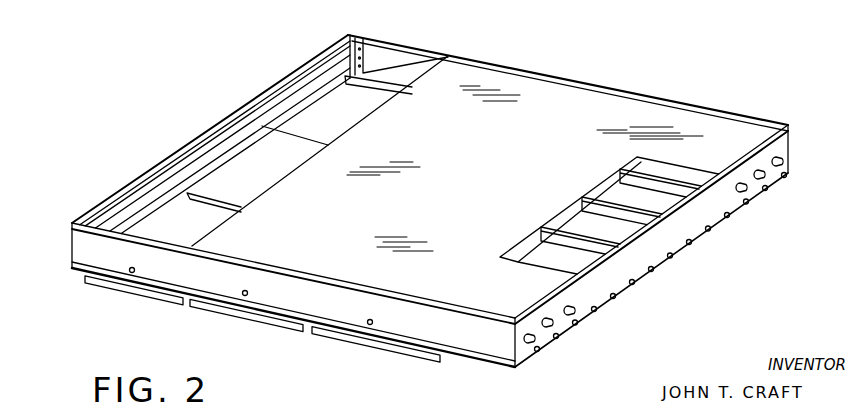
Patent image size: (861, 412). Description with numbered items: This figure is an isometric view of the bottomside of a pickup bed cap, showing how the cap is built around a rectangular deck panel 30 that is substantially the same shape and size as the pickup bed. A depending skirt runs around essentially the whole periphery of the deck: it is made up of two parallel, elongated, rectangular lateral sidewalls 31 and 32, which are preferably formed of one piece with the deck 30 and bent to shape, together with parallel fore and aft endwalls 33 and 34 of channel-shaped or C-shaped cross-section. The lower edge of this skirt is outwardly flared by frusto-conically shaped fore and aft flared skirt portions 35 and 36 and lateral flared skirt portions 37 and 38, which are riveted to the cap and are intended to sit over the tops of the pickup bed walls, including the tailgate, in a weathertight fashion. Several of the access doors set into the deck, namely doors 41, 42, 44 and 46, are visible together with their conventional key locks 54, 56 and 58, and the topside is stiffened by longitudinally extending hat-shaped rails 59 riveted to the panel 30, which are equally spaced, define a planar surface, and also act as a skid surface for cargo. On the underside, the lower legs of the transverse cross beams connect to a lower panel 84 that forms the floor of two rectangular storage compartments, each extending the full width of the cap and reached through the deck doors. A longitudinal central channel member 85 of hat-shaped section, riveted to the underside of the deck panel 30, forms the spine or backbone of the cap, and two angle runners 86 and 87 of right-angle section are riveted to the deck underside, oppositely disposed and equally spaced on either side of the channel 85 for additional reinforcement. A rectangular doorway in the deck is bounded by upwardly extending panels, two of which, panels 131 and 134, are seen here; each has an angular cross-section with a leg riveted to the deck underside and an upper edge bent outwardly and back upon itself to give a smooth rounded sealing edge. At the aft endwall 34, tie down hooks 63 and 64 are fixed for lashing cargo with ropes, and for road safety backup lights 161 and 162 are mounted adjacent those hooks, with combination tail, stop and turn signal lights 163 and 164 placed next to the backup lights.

The deck panel 30 is at (268, 176).
The lateral sidewall 31 is at (393, 71).
The lateral sidewall 32 is at (192, 281).
The fore endwall 33 is at (73, 243).
The aft endwall 34 is at (660, 263).
The fore flared skirt portion 35 is at (220, 118).
The aft flared skirt portion 36 is at (790, 126).
The lateral flared skirt portion 37 is at (430, 50).
The lateral flared skirt portion 38 is at (271, 262).
The access door 41 is at (347, 128).
The access door 42 is at (197, 235).
The access door 44 is at (229, 312).
The access door 46 is at (345, 339).
The key lock 54 is at (133, 271).
The key lock 56 is at (247, 297).
The key lock 58 is at (371, 324).
The rails 59 is at (468, 357).
The tie down hook 63 is at (755, 193).
The tie down hook 64 is at (597, 308).
The lower panel 84 is at (503, 178).
The central channel member 85 is at (582, 194).
The angle runner 86 is at (540, 232).
The angle runner 87 is at (617, 176).
The doorway panel 131 is at (377, 88).
The doorway panel 134 is at (287, 126).
The backup light 161 is at (773, 176).
The backup light 162 is at (566, 327).
The combination tail light 163 is at (785, 161).
The combination tail light 164 is at (543, 343).